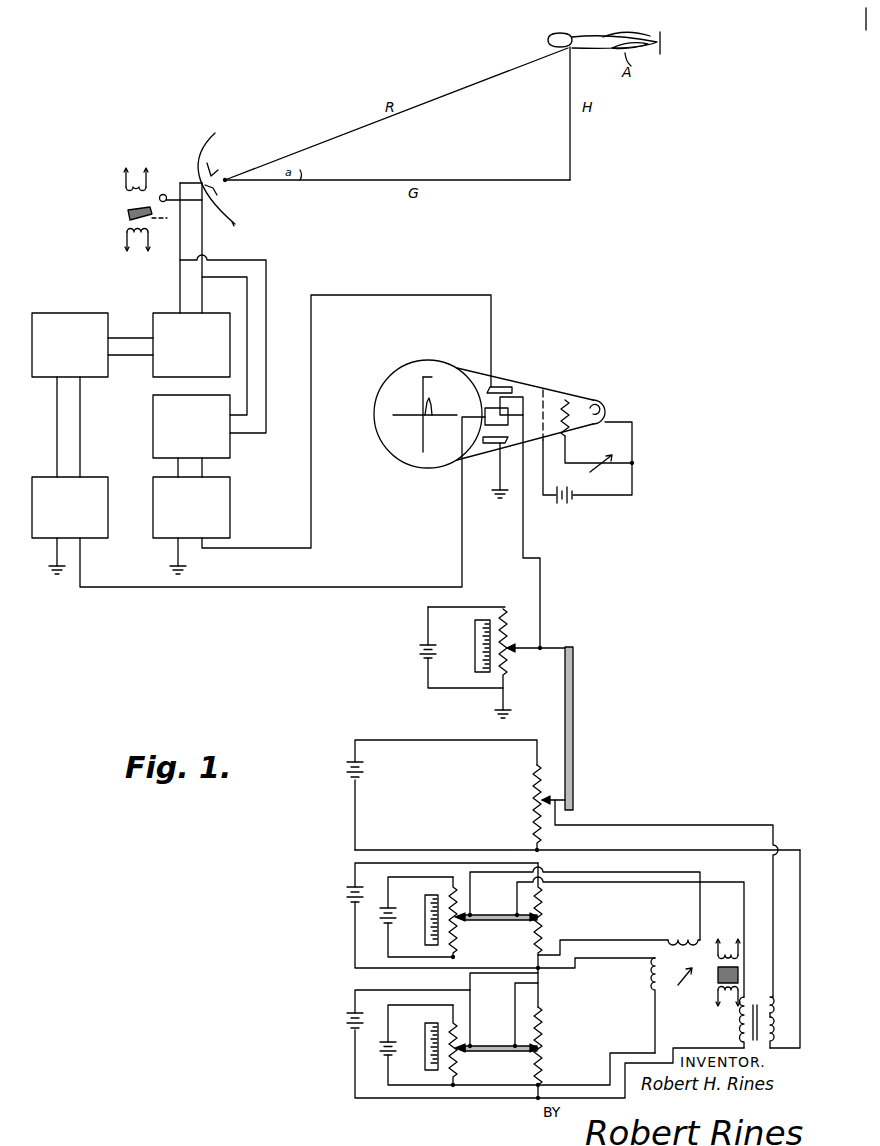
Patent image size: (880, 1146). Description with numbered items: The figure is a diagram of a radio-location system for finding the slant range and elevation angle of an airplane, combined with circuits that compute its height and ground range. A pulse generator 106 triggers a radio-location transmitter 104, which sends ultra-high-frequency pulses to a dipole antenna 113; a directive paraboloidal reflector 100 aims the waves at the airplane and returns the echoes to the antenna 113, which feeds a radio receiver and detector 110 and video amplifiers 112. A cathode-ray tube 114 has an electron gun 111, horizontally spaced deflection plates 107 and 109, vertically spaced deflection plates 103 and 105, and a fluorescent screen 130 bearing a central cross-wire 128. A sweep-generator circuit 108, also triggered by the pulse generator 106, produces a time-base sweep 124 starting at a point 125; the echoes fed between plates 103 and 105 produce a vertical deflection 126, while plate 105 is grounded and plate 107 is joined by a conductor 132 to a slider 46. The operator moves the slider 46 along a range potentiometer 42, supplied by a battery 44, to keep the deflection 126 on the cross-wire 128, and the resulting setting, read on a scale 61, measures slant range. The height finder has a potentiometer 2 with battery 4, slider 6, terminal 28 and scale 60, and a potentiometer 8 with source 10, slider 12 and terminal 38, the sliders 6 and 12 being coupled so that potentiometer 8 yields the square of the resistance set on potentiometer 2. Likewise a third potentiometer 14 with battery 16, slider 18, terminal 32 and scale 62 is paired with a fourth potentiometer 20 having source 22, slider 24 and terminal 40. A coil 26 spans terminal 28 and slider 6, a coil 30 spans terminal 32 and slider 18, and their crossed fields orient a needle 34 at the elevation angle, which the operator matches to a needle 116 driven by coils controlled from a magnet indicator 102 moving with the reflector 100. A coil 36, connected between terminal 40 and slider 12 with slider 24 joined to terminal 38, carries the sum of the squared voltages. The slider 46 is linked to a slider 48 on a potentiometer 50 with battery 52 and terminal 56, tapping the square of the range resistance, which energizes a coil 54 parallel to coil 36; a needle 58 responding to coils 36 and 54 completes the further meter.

The directive paraboloidal reflector 100 is at (236, 226).
The magnet indicator 102 is at (121, 215).
The vertically spaced deflection plate 103 is at (498, 386).
The radio-location transmitter 104 is at (230, 300).
The vertically spaced deflection plate 105 is at (492, 445).
The pulse generator 106 is at (80, 312).
The horizontally spaced deflection plate 107 is at (522, 401).
The sweep-generator circuit 108 is at (98, 475).
The horizontally spaced deflection plate 109 is at (482, 428).
The radio receiver and detector 110 is at (153, 405).
The electron gun 111 is at (569, 414).
The video amplifiers 112 is at (232, 500).
The dipole antenna 113 is at (117, 225).
The cathode-ray tube 114 is at (518, 397).
The needle 116 is at (739, 968).
The time-base sweep 124 is at (405, 414).
The starting point of the sweep 125 is at (418, 405).
The vertical deflection 126 is at (434, 405).
The cross-wire 128 is at (439, 380).
The fluorescent screen 130 is at (389, 378).
The conductor 132 is at (527, 530).
The potentiometer 2 is at (450, 888).
The battery 4 is at (387, 923).
The potentiometer slider 6 is at (457, 914).
The potentiometer 8 is at (542, 898).
The voltage source 10 is at (347, 895).
The slider 12 is at (522, 913).
The third potentiometer 14 is at (453, 1025).
The battery 16 is at (385, 1051).
The slider 18 is at (479, 1046).
The fourth potentiometer 20 is at (545, 1047).
The voltage source 22 is at (346, 1015).
The slider 24 is at (541, 1024).
The coil 26 is at (689, 939).
The terminal 28 is at (455, 957).
The coil 30 is at (650, 977).
The terminal 32 is at (453, 1087).
The moving coil or magnetic needle 34 is at (682, 985).
The coil 36 is at (740, 1031).
The terminal 38 is at (540, 975).
The terminal 40 is at (537, 1100).
The range potentiometer 42 is at (507, 645).
The battery 44 is at (421, 652).
The potentiometer slider 46 is at (554, 646).
The slider 48 is at (558, 800).
The potentiometer 50 is at (534, 777).
The battery 52 is at (349, 764).
The coil 54 is at (771, 1011).
The terminal 56 is at (540, 850).
The needle 58 is at (772, 1031).
The scale 60 is at (425, 900).
The scale 61 is at (475, 625).
The scale 62 is at (425, 1030).